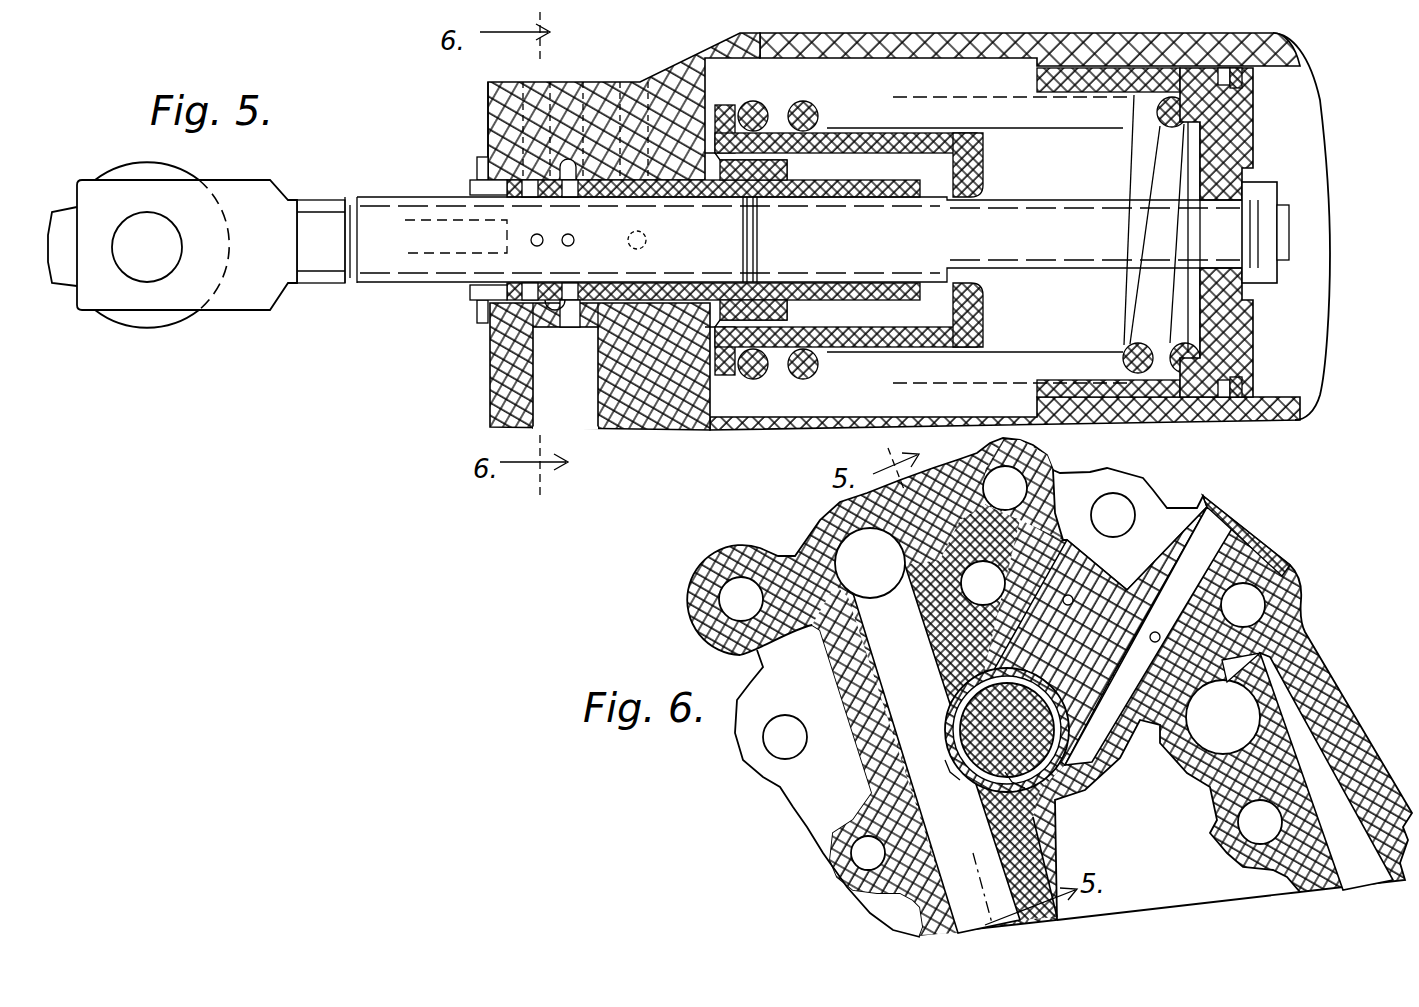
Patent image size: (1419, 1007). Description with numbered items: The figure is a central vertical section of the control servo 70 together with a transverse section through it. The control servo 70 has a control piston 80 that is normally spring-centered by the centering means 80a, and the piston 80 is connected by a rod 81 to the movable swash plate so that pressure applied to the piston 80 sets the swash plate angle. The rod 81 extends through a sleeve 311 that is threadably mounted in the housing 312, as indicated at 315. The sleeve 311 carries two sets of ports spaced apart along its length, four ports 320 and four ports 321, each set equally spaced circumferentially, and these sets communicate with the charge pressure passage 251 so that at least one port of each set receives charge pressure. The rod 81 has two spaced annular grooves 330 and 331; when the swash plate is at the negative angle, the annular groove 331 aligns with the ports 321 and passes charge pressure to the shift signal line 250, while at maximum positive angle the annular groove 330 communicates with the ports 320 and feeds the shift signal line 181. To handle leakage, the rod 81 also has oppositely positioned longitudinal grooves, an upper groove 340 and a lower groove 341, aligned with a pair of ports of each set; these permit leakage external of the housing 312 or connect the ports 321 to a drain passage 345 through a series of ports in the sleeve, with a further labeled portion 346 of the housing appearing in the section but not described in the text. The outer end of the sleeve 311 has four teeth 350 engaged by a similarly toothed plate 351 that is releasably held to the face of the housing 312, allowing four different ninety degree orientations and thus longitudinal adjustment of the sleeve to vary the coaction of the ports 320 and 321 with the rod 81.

In FIG. 5, the control servo 70 is at (688, 462).
In FIG. 5, the control piston 80 is at (1240, 332).
In FIG. 5, the centering means 80a is at (905, 96).
In FIG. 5, the rod 81 is at (403, 264).
In FIG. 6, the rod 81 is at (1035, 742).
In FIG. 5, the shift signal line 181 is at (487, 98).
In FIG. 6, the shift signal line 181 is at (1213, 572).
In FIG. 5, the shift signal line 250 is at (565, 80).
In FIG. 6, the shift signal line 250 is at (1110, 548).
In FIG. 5, the charge pressure passage 251 is at (598, 412).
In FIG. 6, the charge pressure passage 251 is at (985, 853).
In FIG. 5, the sleeve 311 is at (933, 184).
In FIG. 6, the sleeve 311 is at (948, 712).
In FIG. 5, the housing 312 is at (490, 410).
In FIG. 6, the housing 312 is at (820, 815).
In FIG. 5, the threaded mounting 315 is at (805, 352).
In FIG. 5, the ports 320 is at (527, 300).
In FIG. 6, the ports 320 is at (956, 764).
In FIG. 5, the ports 321 is at (571, 300).
In FIG. 5, the annular groove 330 is at (352, 286).
In FIG. 5, the annular groove 331 is at (752, 233).
In FIG. 5, the upper groove 340 is at (393, 198).
In FIG. 6, the upper groove 340 is at (958, 729).
In FIG. 5, the lower groove 341 is at (430, 288).
In FIG. 6, the lower groove 341 is at (1030, 760).
In FIG. 5, the drain passage 345 is at (638, 194).
In FIG. 5, the gland housing 346 is at (642, 84).
In FIG. 6, the gland housing 346 is at (1220, 515).
In FIG. 5, the teeth 350 is at (470, 184).
In FIG. 5, the toothed plate 351 is at (480, 158).